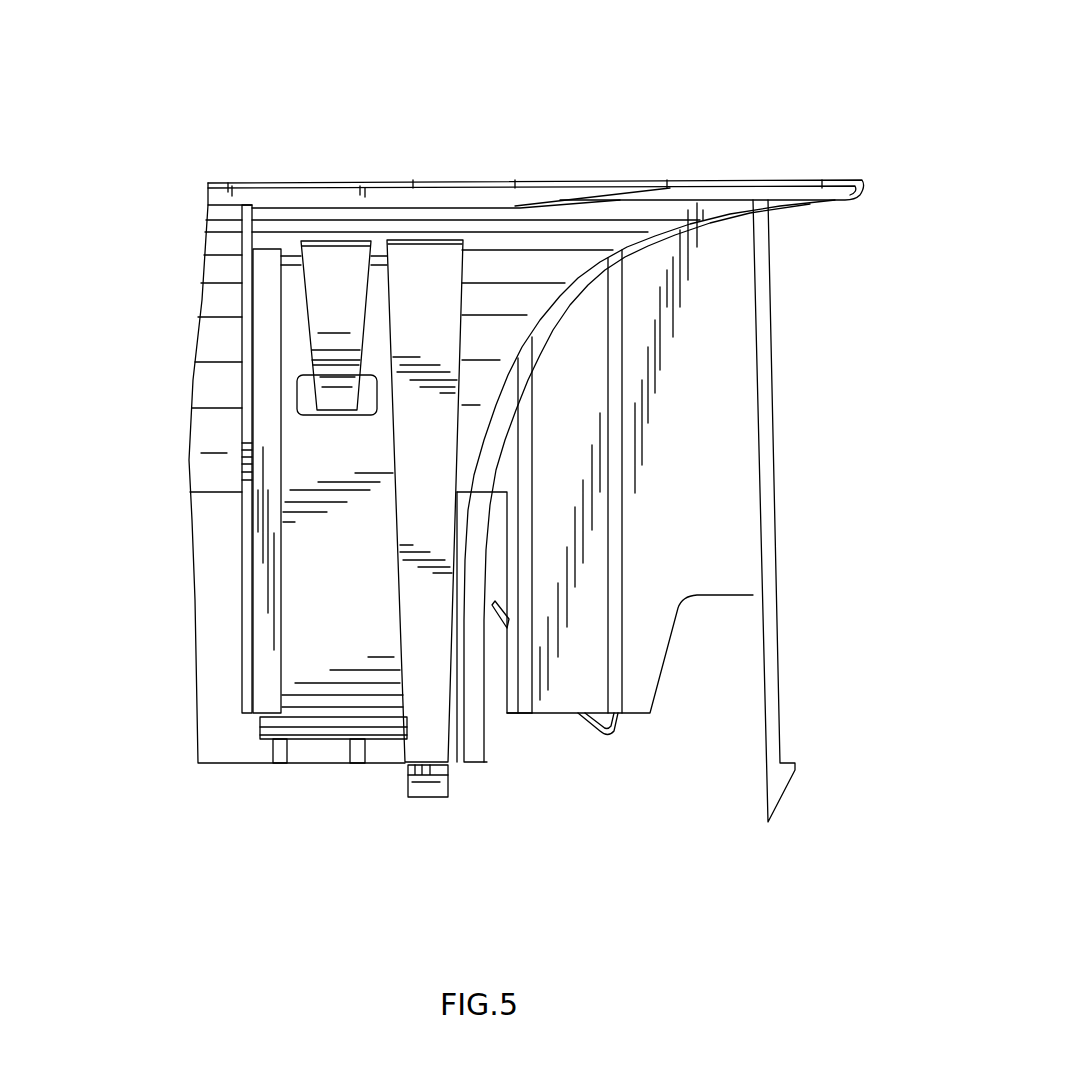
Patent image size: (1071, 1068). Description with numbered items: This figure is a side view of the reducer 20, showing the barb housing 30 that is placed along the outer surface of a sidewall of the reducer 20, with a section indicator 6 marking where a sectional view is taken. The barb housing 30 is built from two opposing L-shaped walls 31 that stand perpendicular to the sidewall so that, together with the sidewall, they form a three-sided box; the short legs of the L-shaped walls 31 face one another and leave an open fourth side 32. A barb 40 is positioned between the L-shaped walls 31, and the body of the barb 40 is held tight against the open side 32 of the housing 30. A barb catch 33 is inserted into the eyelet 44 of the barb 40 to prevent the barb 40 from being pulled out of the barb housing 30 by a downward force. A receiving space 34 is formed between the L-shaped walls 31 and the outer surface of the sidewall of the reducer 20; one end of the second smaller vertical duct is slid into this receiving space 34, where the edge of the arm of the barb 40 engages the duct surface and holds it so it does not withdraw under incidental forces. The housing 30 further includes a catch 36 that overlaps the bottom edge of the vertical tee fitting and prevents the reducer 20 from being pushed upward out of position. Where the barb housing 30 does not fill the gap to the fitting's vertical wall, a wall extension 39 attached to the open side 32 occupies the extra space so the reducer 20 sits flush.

The reducer 20 is at (597, 148).
The section line 6- 6 is at (335, 275).
The barb housing 30 is at (256, 608).
The L-shaped walls 31 is at (253, 676).
The open fourth side 32 is at (258, 703).
The barb catch 33 is at (323, 343).
The receiving space 34 is at (493, 698).
The catch 36 is at (425, 788).
The wall extension 39 is at (718, 433).
The barb 40 is at (323, 703).
The eyelet 44 is at (300, 397).